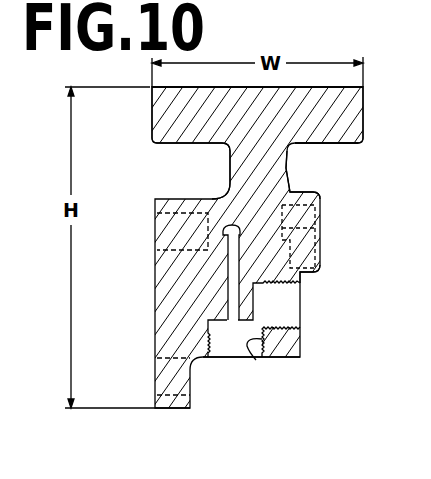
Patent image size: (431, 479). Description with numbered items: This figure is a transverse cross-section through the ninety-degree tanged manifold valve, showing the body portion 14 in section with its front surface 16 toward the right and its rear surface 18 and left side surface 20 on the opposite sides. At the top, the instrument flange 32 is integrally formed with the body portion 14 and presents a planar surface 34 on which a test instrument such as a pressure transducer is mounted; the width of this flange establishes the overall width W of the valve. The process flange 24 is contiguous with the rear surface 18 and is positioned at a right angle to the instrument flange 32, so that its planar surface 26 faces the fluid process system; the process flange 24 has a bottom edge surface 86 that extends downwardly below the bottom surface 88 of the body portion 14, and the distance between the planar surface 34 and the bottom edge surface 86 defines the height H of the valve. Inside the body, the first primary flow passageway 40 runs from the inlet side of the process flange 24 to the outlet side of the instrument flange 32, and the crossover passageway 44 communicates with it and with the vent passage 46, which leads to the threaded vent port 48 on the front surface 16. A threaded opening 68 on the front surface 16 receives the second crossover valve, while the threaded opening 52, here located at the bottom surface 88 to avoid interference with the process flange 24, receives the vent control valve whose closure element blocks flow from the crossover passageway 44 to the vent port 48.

The body portion 14 is at (290, 192).
The front surface 16 is at (288, 159).
The rear surface 18 is at (207, 195).
The process flange 24 is at (177, 328).
The planar surface 26 is at (155, 288).
The instrument flange 32 is at (350, 105).
The planar surface 34 is at (317, 86).
The crossover passageway 44 is at (304, 272).
The vent passage 46 is at (240, 292).
The vent port 48 is at (274, 325).
The threaded opening 52 is at (256, 360).
The threaded opening 68 is at (319, 220).
The bottom edge surface 86 is at (172, 410).
The bottom surface 88 is at (300, 358).
The first primary flow passageway 40 is at (423, 246).
The left side surface 20 is at (423, 287).